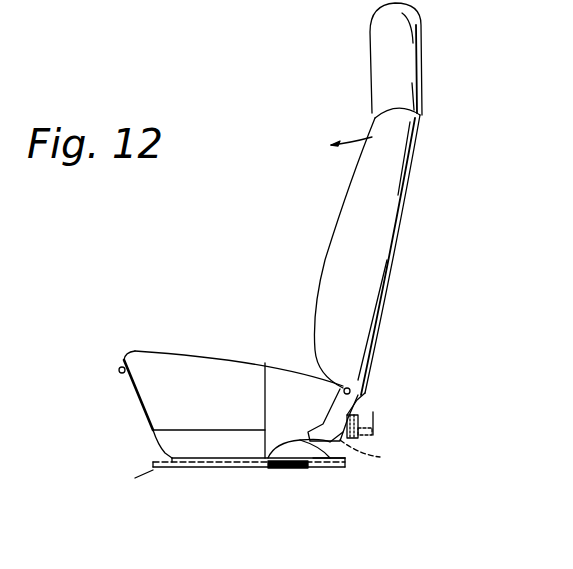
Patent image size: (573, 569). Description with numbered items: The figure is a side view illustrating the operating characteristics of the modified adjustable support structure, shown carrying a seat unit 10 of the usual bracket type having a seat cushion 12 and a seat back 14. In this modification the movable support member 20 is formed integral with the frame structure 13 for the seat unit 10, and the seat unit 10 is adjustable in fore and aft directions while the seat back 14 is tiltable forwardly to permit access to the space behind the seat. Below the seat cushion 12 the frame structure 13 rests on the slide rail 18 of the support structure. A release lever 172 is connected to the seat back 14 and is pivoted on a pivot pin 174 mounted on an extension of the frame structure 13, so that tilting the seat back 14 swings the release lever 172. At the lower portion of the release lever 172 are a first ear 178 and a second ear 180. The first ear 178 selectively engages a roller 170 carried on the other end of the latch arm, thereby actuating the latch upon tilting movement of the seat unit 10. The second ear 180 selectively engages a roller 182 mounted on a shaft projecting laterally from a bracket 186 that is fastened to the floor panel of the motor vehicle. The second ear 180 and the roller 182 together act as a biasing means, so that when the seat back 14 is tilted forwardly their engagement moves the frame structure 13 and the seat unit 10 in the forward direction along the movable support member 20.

The seat unit 10 is at (412, 188).
The seat cushion 12 is at (155, 352).
The frame structure 13 is at (153, 442).
The seat back 14 is at (393, 279).
The seat slide rail 18 is at (212, 466).
The movable support member 20 is at (187, 463).
The roller 170 is at (372, 432).
The release lever 172 is at (363, 393).
The pivot pin 174 is at (362, 398).
The first ear 178 is at (362, 440).
The second ear 180 is at (318, 423).
The roller 182 is at (330, 466).
The bracket 186 is at (280, 440).